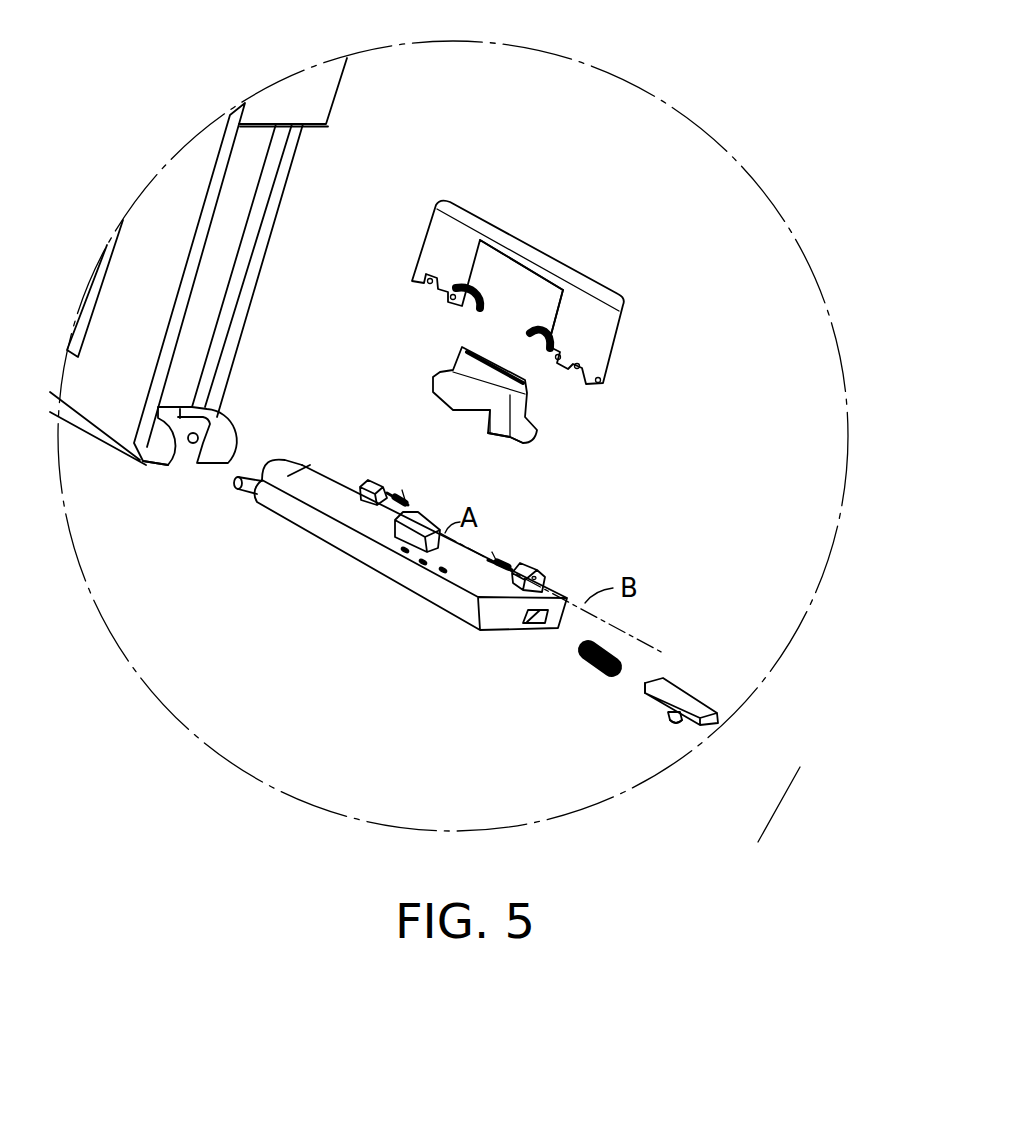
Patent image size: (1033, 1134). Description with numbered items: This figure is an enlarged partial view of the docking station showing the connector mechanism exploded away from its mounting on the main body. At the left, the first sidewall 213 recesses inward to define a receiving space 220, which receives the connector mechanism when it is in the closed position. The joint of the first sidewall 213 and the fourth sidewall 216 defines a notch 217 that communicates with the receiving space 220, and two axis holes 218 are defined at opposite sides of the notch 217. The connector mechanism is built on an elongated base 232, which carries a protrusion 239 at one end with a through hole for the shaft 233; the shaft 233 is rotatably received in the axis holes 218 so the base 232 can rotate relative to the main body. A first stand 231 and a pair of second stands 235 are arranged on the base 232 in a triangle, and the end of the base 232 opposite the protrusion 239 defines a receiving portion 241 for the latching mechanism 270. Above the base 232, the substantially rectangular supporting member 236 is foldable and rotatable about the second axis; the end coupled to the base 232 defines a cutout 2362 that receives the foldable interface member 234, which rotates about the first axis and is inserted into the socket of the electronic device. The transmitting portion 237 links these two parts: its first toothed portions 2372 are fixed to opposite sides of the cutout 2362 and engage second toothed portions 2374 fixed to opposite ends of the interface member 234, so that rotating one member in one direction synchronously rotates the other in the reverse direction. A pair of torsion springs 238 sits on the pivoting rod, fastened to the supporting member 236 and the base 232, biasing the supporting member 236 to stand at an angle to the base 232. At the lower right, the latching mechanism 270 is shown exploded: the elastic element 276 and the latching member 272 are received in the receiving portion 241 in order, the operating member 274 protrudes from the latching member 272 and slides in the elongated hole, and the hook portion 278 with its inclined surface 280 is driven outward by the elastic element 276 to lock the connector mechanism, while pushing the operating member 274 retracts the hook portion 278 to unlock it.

The first sidewall 213 is at (298, 97).
The receiving space 220 is at (233, 210).
The fourth sidewall 216 is at (120, 450).
The notch 217 is at (178, 460).
The axis holes 218 is at (193, 443).
The supporting member 236 is at (597, 318).
The cutout 2362 is at (507, 308).
The first toothed portions 2372 is at (545, 328).
The transmitting portion 237 is at (450, 375).
The interface member 234 is at (510, 392).
The second toothed portions 2374 is at (517, 420).
The base 232 is at (403, 582).
The protrusion 239 is at (273, 468).
The shaft 233 is at (247, 490).
The receiving portion 241 is at (537, 613).
The second stands 235 is at (375, 488).
The first stand 231 is at (410, 532).
The torsion springs 238 is at (498, 556).
The latching mechanism 270 is at (718, 746).
The elastic element 276 is at (597, 670).
The inclined surface 280 is at (703, 713).
The hook portion 278 is at (707, 727).
The operating member 274 is at (675, 723).
The latching member 272 is at (652, 693).